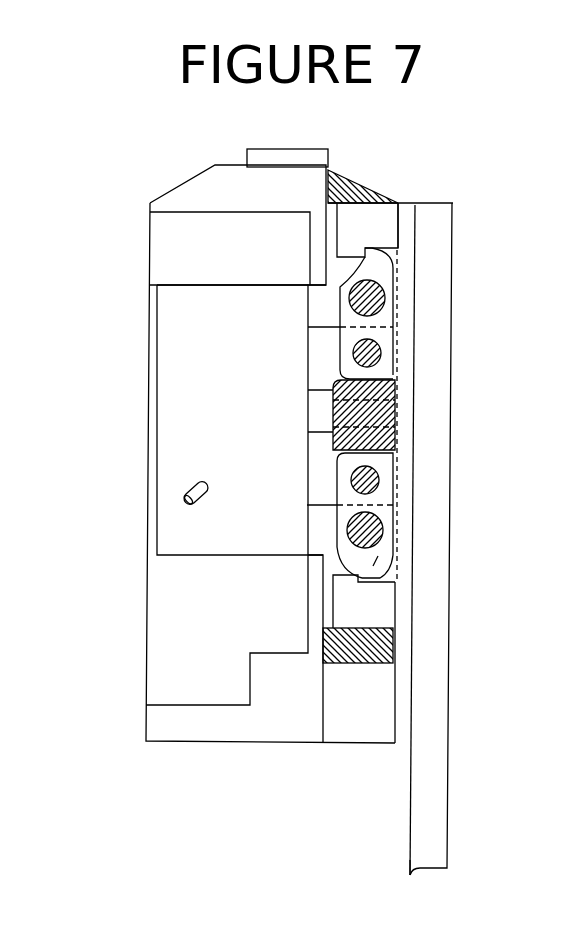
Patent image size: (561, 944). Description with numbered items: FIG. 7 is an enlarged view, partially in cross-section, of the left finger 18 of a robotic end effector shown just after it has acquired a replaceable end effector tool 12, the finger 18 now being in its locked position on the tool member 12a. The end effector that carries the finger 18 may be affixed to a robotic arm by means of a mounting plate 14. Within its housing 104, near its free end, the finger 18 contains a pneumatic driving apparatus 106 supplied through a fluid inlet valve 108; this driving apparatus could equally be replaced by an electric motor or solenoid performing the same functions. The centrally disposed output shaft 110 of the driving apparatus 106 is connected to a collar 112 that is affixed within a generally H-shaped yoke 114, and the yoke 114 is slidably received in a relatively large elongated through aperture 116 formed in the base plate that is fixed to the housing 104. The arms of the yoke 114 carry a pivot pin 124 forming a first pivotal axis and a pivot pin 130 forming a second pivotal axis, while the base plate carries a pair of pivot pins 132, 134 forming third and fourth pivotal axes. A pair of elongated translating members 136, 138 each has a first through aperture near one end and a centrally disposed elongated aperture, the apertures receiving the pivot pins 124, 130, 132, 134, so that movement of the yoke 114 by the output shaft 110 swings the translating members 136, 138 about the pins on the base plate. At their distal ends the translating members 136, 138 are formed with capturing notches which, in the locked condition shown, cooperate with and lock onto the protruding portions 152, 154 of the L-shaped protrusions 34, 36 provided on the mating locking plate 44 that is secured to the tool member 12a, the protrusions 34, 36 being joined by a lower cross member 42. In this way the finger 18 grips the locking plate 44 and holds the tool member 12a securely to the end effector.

The replaceable end effector tool 12 is at (452, 209).
The tool member 12a is at (417, 822).
The mounting plate 14 is at (293, 162).
The finger 18 is at (368, 178).
The L-shaped protrusion 34 is at (345, 175).
The L-shaped protrusion 36 is at (387, 605).
The lower cross member 42 is at (393, 574).
The mating locking plate 44 is at (408, 217).
The housing 104 is at (148, 725).
The pneumatic driving apparatus 106 is at (172, 397).
The fluid inlet valve 108 is at (177, 498).
The output shaft 110 is at (323, 413).
The collar 112 is at (333, 388).
The yoke 114 is at (395, 378).
The elongated through aperture 116 is at (415, 372).
The pivot pin 124 is at (378, 465).
The pivot pin 130 is at (378, 345).
The pivot pin 132 is at (388, 265).
The pivot pin 134 is at (380, 519).
The elongated translating member 136 is at (386, 300).
The elongated translating member 138 is at (377, 562).
The protruding portion 152 is at (350, 250).
The protruding portion 154 is at (343, 580).